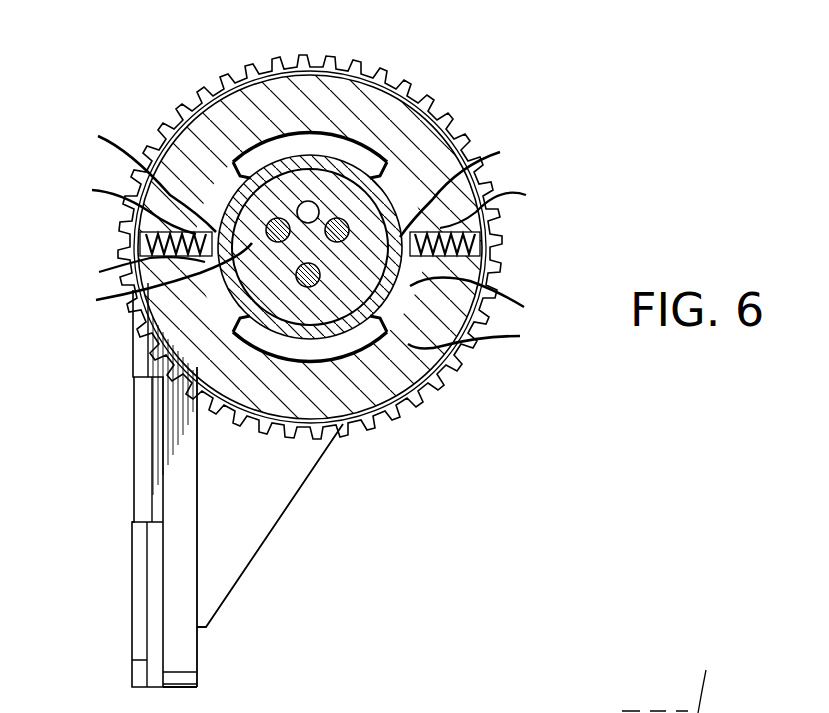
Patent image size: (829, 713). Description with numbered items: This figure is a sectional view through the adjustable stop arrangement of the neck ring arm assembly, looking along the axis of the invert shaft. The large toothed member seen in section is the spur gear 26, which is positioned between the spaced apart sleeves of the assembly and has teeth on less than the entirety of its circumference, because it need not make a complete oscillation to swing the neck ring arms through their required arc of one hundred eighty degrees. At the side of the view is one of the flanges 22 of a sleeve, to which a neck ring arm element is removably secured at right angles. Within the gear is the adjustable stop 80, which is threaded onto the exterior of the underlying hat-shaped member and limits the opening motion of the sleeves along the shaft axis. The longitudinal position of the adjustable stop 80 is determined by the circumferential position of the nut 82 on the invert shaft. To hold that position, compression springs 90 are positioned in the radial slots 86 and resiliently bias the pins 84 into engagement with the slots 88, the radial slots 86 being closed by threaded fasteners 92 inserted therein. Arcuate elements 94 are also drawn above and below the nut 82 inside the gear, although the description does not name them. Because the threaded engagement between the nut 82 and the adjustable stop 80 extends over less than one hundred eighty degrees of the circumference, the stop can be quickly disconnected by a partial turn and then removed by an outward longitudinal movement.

The flange 22 is at (132, 605).
The spur gear 26 is at (401, 70).
The adjustable stop 80 is at (406, 163).
The nut 82 is at (404, 302).
The pin 84 is at (296, 223).
The radial slot 86 is at (303, 244).
The slot 88 is at (306, 232).
The compression spring 90 is at (310, 232).
The threaded fastener 92 is at (148, 243).
The arcuate retainer 94 is at (276, 166).